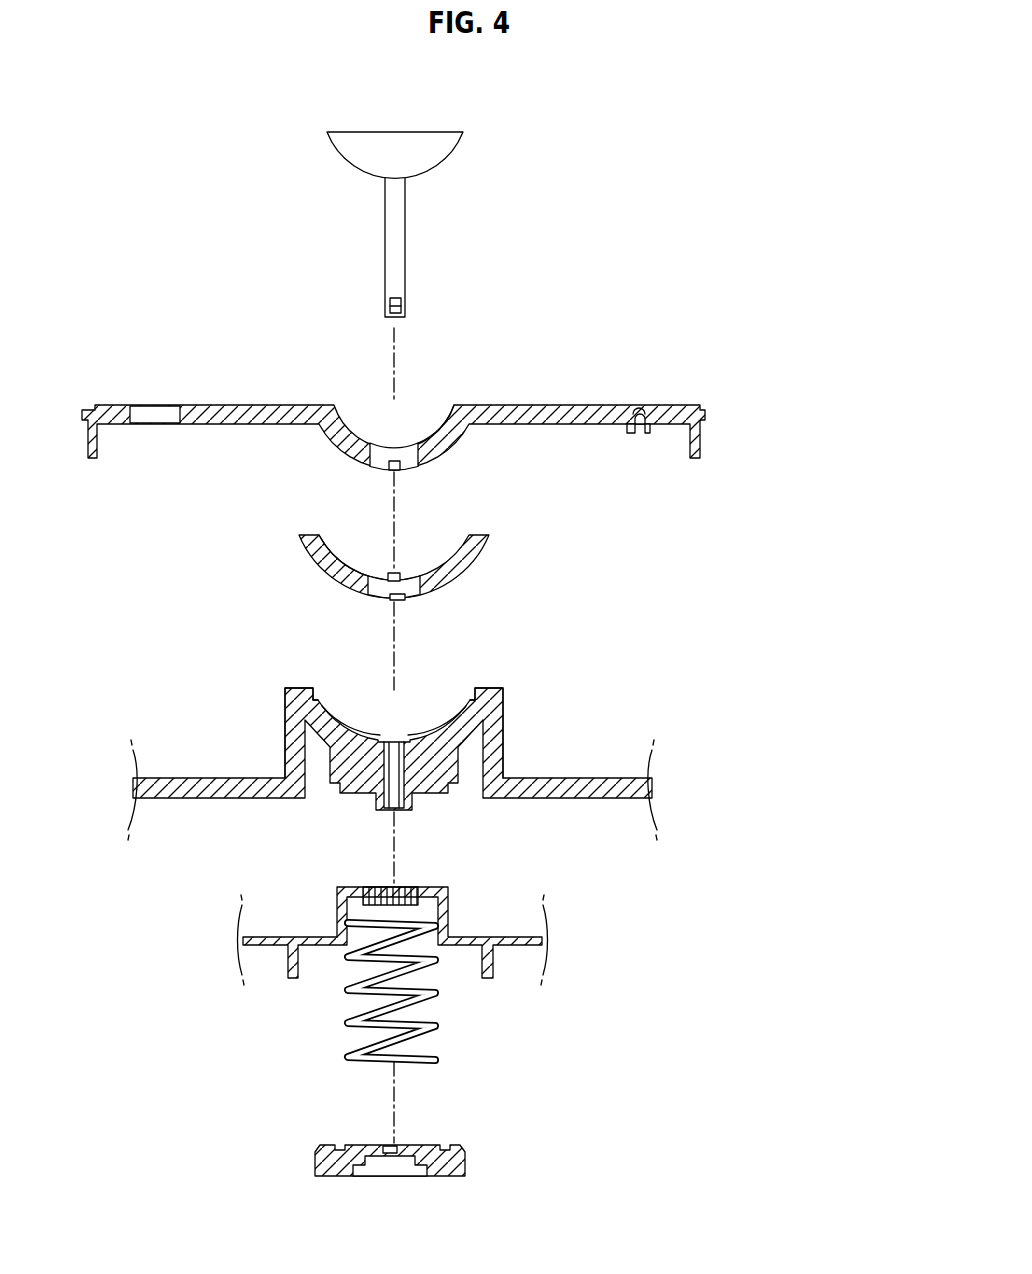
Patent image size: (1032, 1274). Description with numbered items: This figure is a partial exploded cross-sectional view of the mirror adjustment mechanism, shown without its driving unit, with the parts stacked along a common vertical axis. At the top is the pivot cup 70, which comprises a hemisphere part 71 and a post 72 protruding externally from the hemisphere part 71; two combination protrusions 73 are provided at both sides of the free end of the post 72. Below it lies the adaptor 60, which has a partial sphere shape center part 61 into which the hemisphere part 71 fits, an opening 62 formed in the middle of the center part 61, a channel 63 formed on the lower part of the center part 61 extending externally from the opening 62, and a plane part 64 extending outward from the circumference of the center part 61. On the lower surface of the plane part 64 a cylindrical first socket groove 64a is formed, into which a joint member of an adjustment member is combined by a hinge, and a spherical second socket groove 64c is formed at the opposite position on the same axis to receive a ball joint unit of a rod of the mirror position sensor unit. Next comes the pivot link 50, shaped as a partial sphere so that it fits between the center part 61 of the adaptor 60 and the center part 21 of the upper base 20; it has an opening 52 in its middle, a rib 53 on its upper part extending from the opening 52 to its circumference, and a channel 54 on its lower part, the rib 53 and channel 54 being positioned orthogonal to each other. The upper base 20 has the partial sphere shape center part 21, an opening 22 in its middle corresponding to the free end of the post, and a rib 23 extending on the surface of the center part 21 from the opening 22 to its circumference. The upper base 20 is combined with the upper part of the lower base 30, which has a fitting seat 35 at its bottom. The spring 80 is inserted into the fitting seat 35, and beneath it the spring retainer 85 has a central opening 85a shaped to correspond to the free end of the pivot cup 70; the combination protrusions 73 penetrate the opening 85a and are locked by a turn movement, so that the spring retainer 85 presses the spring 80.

The pivot cup 70 is at (530, 139).
The hemisphere part 71 is at (345, 146).
The post 72 is at (400, 241).
The combination protrusions 73 is at (396, 307).
The adaptor 60 is at (763, 381).
The center part 61 is at (450, 420).
The opening 62 is at (380, 449).
The channel 63 is at (400, 471).
The plane part 64 is at (614, 405).
The first socket groove 64a is at (152, 424).
The second socket groove 64c is at (640, 434).
The pivot link 50 is at (600, 546).
The opening 52 is at (405, 598).
The rib 53 is at (390, 574).
The channel 54 is at (322, 566).
The upper base 20 is at (705, 737).
The center part 21 is at (476, 700).
The opening 22 is at (390, 736).
The rib 23 is at (302, 700).
The lower base 30 is at (583, 902).
The fitting seat 35 is at (416, 898).
The spring 80 is at (350, 1024).
The spring retainer 85 is at (465, 1160).
The opening 85a is at (392, 1146).